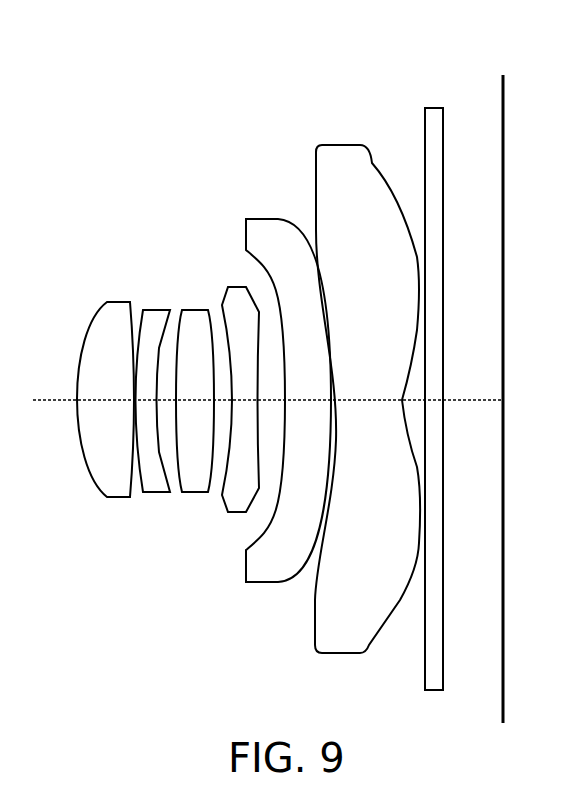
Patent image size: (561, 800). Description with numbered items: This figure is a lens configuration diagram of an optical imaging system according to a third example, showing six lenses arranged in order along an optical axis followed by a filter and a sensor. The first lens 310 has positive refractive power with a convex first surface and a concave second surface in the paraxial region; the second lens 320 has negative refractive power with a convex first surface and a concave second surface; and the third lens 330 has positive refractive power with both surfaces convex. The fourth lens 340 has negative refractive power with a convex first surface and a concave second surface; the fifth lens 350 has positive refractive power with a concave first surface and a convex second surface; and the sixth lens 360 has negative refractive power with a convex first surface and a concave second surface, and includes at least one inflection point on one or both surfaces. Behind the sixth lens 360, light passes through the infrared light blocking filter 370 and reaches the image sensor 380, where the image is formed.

The first lens 310 is at (115, 301).
The second lens 320 is at (158, 309).
The third lens 330 is at (195, 309).
The fourth lens 340 is at (233, 286).
The fifth lens 350 is at (262, 218).
The sixth lens 360 is at (340, 145).
The infrared light blocking filter 370 is at (435, 108).
The image sensor 380 is at (503, 90).